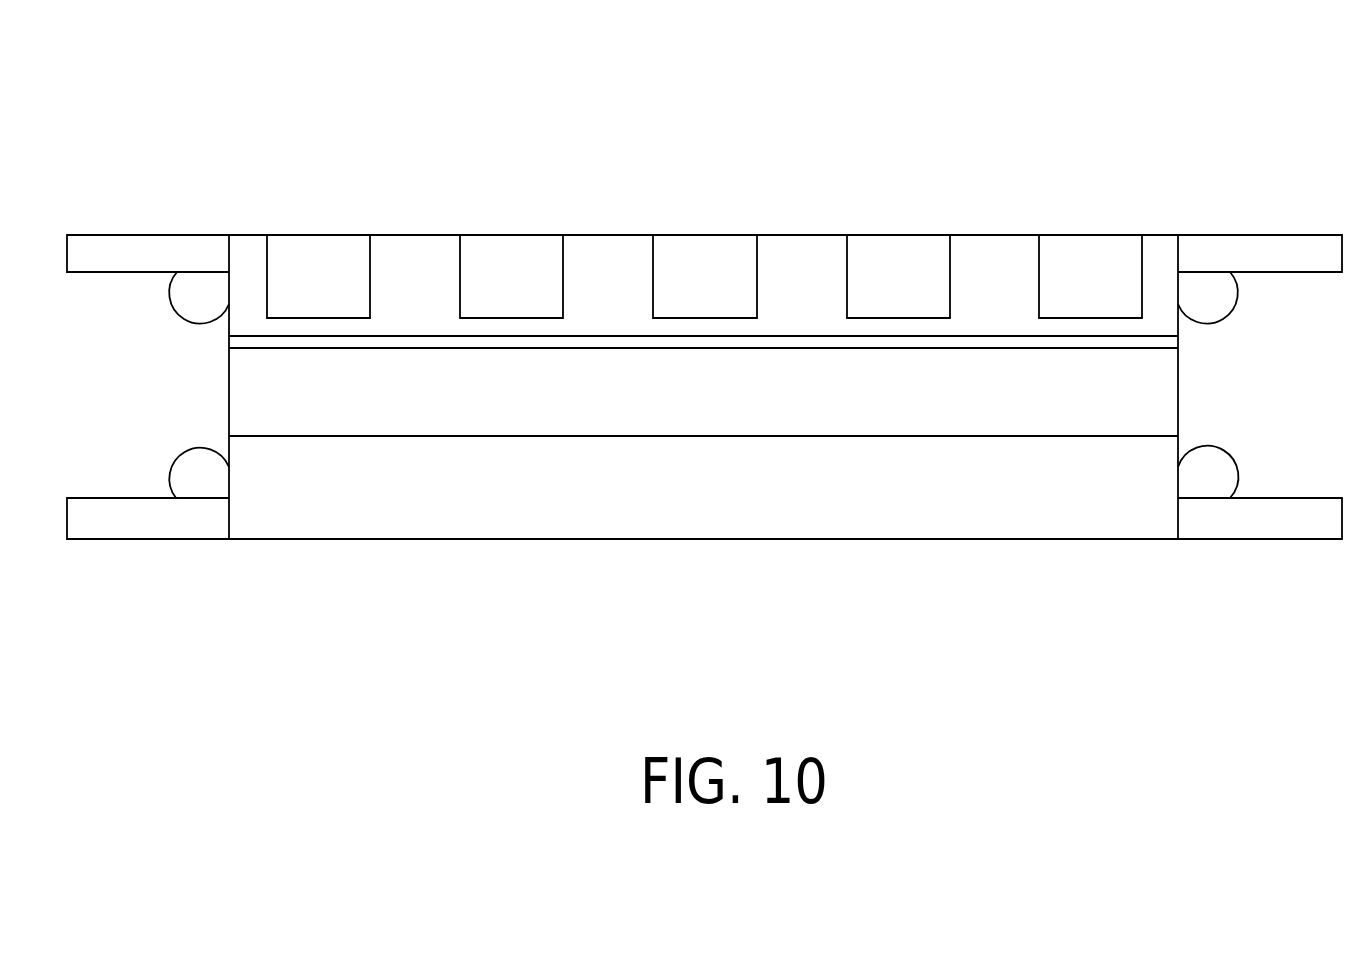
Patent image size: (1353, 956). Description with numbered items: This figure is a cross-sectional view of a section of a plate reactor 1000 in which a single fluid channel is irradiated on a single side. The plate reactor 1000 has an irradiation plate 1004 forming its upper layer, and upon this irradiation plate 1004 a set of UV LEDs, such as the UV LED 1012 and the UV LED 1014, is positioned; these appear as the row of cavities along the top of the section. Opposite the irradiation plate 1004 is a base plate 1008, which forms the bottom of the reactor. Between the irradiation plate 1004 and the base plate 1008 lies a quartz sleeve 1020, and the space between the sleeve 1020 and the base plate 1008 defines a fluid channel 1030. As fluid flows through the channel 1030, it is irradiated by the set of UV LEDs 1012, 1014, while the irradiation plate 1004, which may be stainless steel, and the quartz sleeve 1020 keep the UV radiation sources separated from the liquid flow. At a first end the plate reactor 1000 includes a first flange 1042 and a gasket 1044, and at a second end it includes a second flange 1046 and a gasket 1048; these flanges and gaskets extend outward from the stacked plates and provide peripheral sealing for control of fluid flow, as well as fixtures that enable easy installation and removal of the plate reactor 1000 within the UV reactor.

The plate reactor 1000 is at (436, 135).
The irradiation plate 1004 is at (613, 235).
The base plate 1008 is at (492, 502).
The UV LED 1012 is at (328, 263).
The UV LED 1014 is at (910, 262).
The sleeve 1020 is at (1082, 337).
The fluid channel 1030 is at (977, 390).
The first flange 1042 is at (155, 233).
The gasket 1044 is at (170, 300).
The second flange 1046 is at (1313, 233).
The gasket 1048 is at (1230, 317).